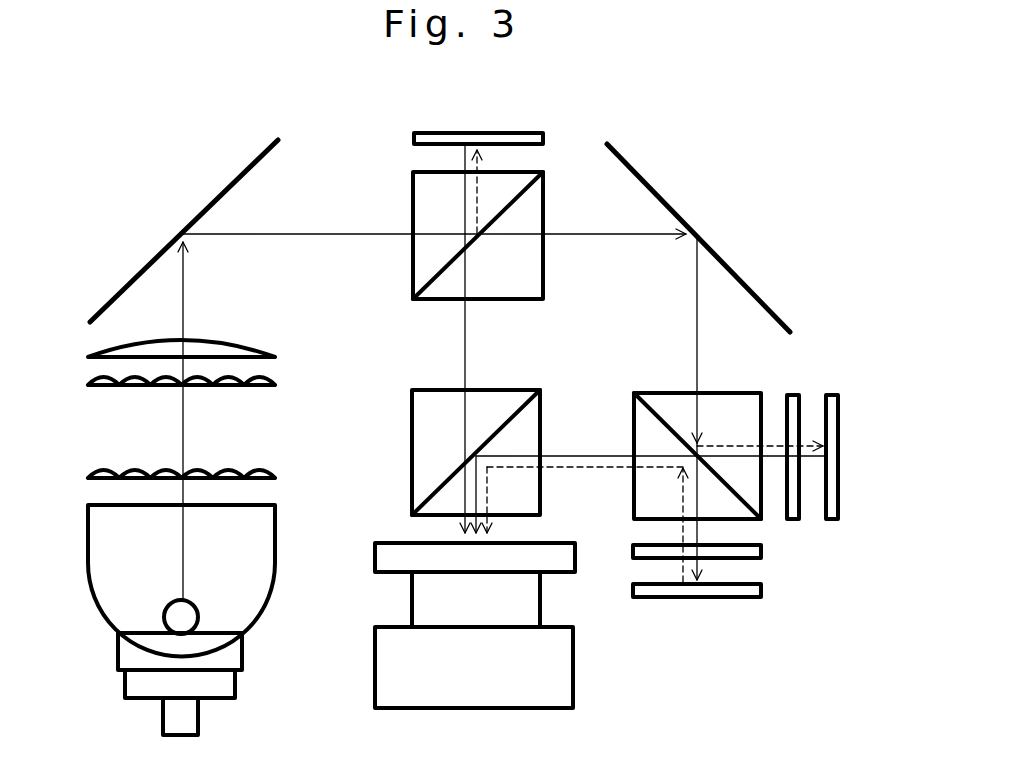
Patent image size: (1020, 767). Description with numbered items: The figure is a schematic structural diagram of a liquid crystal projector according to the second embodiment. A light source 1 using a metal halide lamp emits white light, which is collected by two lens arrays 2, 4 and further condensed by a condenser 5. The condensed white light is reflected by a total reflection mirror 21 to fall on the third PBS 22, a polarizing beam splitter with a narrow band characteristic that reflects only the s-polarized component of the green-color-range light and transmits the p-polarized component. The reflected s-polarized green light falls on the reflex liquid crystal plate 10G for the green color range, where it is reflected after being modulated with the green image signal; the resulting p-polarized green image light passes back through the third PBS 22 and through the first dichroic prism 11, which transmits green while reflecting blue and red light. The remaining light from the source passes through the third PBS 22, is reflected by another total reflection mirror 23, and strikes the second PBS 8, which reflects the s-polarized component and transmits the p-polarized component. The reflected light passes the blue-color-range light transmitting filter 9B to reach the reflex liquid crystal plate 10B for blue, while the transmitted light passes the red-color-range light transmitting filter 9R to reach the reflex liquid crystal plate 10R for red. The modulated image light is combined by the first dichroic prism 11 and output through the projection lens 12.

The light source 1 is at (258, 524).
The lens array 2 is at (275, 477).
The lens array 4 is at (268, 388).
The condenser 5 is at (222, 350).
The second PBS 8 is at (645, 413).
The blue-color-range light transmitting filter 9B is at (793, 415).
The red-color-range light transmitting filter 9R is at (750, 552).
The reflex liquid crystal plate for blue color range 10B is at (832, 418).
The reflex liquid crystal plate for green color range 10G is at (432, 137).
The reflex liquid crystal plate for red color range 10R is at (748, 590).
The first dichroic prism 11 is at (426, 400).
The projection lens 12 is at (395, 647).
The total reflection mirror 21 is at (245, 170).
The third PBS 22 is at (426, 180).
The total reflection mirror 23 is at (643, 178).